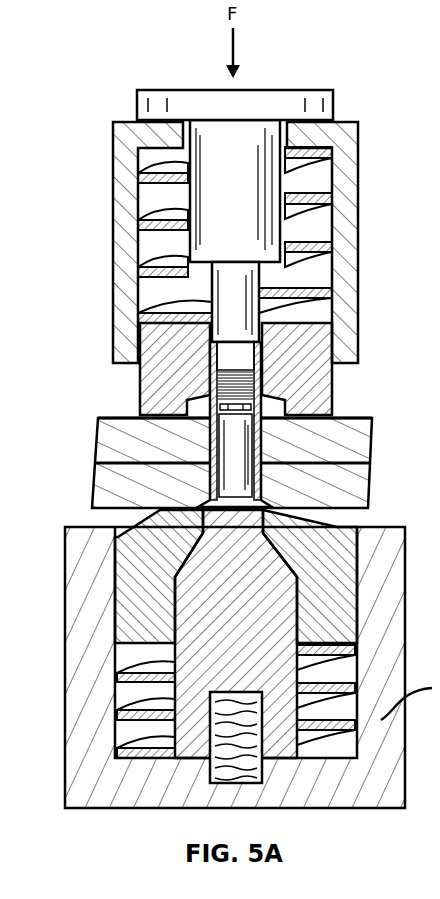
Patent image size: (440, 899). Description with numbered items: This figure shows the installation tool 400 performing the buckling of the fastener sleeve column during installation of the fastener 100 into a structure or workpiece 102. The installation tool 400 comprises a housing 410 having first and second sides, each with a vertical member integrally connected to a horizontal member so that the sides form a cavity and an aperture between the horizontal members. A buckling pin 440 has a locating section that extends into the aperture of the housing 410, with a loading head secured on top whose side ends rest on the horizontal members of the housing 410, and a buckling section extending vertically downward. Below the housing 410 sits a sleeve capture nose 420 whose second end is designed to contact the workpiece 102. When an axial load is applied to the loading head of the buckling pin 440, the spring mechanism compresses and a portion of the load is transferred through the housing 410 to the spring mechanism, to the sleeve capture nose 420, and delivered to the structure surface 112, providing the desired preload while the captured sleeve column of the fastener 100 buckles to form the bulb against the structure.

The installation tool 400 is at (90, 102).
The housing 410 is at (122, 225).
The sleeve capture nose 420 is at (147, 405).
The buckling pin 440 is at (283, 98).
The workpiece 102 is at (107, 452).
The structure surface 112 is at (345, 416).
The fastener 100 is at (245, 491).